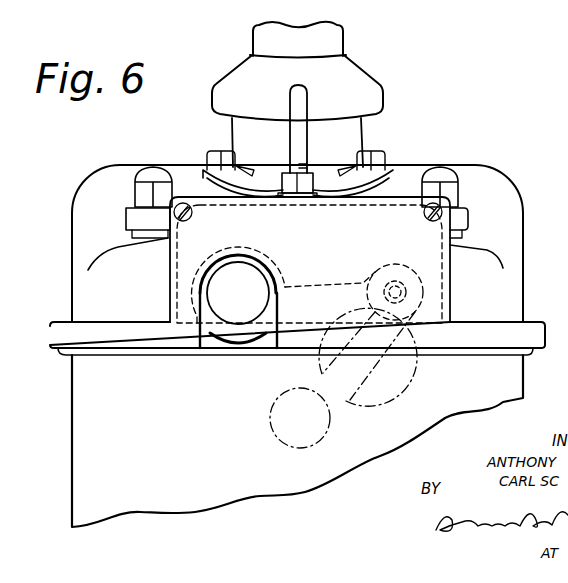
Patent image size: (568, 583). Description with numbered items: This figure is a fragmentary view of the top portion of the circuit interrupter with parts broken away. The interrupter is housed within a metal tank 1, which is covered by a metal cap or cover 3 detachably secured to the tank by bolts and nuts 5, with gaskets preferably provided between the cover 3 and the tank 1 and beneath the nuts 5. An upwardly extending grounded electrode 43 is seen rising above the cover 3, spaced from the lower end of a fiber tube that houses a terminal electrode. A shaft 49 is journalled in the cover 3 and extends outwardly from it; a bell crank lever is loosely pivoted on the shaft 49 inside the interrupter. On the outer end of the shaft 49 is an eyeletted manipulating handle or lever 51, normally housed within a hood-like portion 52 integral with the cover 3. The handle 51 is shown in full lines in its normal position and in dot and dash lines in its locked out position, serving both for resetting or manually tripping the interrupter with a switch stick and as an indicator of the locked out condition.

The tank 1 is at (70, 436).
The cap or cover 3 is at (524, 233).
The nuts 5 is at (136, 196).
The grounded electrodes 43 is at (308, 100).
The shaft 49 is at (397, 266).
The manipulating handle or lever 51 is at (232, 337).
The hood-like portion 52 is at (187, 253).